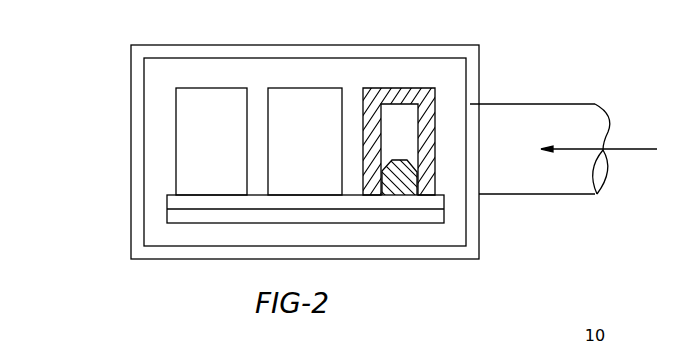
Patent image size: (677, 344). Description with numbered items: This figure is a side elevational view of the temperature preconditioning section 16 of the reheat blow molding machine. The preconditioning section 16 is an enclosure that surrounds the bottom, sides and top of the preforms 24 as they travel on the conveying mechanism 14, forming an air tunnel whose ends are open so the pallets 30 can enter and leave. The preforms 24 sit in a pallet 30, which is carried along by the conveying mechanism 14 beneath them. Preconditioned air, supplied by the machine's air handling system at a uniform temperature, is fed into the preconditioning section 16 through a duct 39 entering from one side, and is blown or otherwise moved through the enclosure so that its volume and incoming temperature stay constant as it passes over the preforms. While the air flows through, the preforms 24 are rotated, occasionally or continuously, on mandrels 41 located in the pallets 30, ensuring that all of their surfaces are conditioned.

The conveying mechanism 14 is at (406, 219).
The preconditioning section 16 is at (131, 149).
The preforms 24 is at (206, 95).
The pallet 30 is at (437, 201).
The duct 39 is at (527, 112).
The mandrel 41 is at (398, 160).